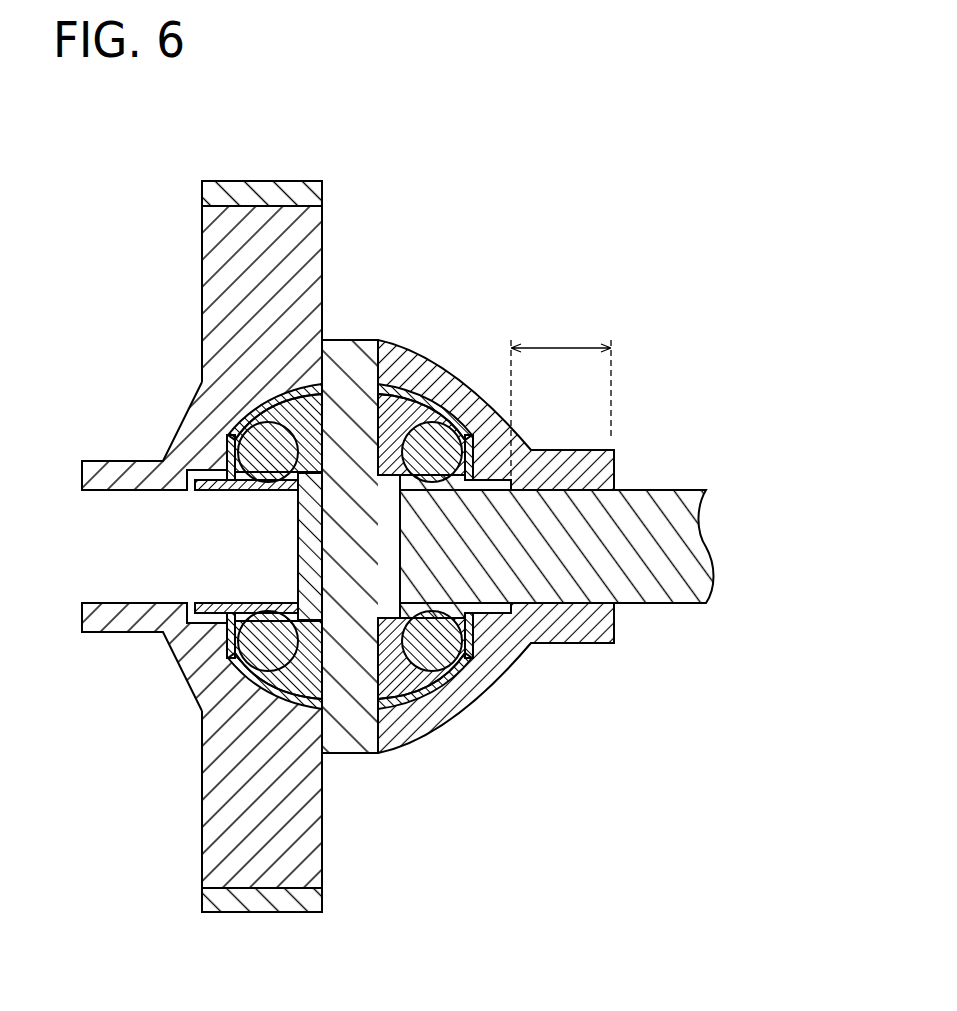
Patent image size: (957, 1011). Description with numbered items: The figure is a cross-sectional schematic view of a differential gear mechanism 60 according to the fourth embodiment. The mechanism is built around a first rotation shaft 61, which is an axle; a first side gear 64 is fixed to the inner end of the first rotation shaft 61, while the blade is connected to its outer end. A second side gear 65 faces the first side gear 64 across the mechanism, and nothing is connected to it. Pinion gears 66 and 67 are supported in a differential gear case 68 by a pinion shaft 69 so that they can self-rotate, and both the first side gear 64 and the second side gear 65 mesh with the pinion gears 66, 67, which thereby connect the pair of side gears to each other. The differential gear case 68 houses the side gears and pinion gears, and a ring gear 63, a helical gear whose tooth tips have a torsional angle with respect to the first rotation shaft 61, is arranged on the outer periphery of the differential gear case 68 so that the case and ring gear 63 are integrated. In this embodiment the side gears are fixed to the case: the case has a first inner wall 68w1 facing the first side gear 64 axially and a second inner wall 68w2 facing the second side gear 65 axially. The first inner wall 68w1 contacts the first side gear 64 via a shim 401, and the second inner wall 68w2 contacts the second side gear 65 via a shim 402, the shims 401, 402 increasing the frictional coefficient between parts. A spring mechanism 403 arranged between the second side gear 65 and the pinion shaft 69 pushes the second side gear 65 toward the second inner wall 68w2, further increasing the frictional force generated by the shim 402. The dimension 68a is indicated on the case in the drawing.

The differential gear mechanism 60 is at (743, 301).
The first rotation shaft 61 is at (683, 558).
The ring gear 63 is at (289, 195).
The first side gear 64 is at (396, 402).
The second side gear 65 is at (296, 490).
The pinion gear 66 is at (389, 672).
The pinion gear 67 is at (381, 362).
The differential gear case 68 is at (394, 348).
The flange width 68a is at (562, 347).
The first inner wall 68w1 is at (468, 434).
The second inner wall 68w2 is at (229, 440).
The pinion shaft 69 is at (355, 722).
The shim 401 is at (455, 430).
The shim 402 is at (221, 448).
The spring mechanism 403 is at (298, 530).